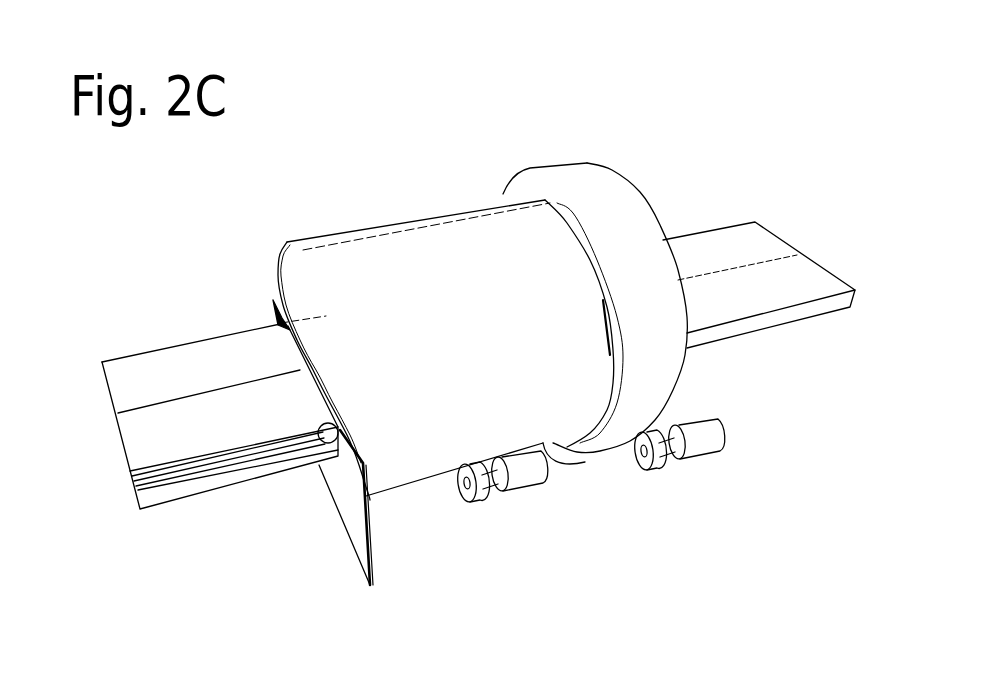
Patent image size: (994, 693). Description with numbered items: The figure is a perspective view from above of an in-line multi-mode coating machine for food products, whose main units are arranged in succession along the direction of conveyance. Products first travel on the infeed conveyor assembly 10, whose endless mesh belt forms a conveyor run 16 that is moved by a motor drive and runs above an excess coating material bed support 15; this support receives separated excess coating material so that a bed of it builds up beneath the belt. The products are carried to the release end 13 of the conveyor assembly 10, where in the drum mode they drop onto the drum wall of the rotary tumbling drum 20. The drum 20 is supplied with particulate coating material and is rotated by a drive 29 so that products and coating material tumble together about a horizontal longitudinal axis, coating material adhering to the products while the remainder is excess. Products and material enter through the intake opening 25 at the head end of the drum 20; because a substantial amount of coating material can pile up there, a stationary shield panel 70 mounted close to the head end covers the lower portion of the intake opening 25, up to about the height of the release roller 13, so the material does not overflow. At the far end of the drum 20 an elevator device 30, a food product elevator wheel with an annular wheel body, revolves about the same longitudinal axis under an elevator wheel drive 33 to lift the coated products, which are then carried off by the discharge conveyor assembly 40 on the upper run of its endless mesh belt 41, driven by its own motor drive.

The infeed conveyor assembly 10 is at (193, 333).
The release end 13 is at (318, 378).
The excess coating material bed support 15 is at (135, 482).
The conveyor run 16 is at (132, 455).
The rotary tumbling drum 20 is at (409, 199).
The intake opening 25 is at (270, 285).
The drive 29 is at (522, 478).
The elevator device 30 is at (572, 156).
The elevator wheel drive 33 is at (700, 445).
The discharge conveyor assembly 40 is at (690, 203).
The endless belt 41 is at (740, 240).
The shield panel 70 is at (370, 543).